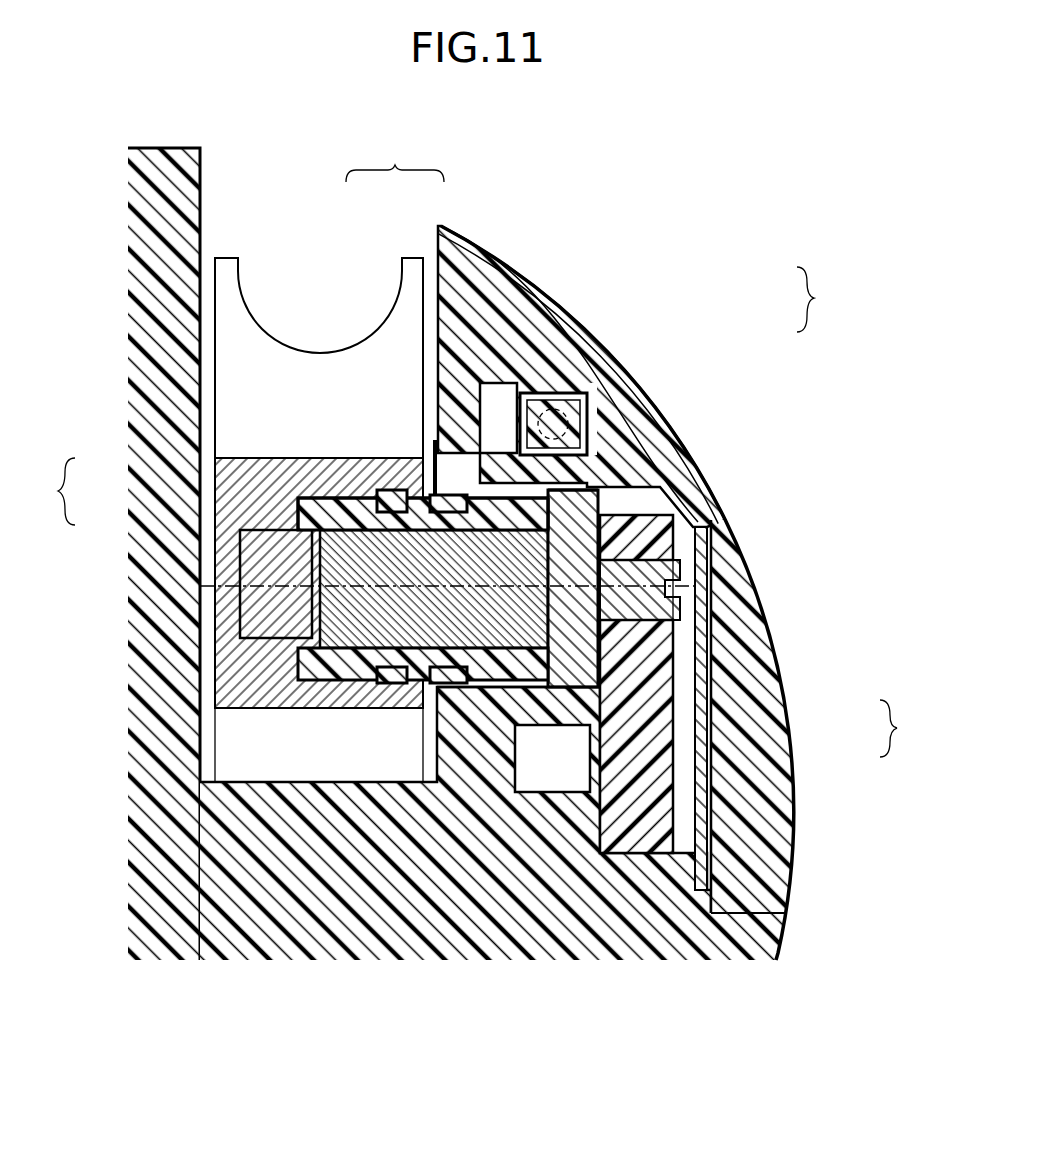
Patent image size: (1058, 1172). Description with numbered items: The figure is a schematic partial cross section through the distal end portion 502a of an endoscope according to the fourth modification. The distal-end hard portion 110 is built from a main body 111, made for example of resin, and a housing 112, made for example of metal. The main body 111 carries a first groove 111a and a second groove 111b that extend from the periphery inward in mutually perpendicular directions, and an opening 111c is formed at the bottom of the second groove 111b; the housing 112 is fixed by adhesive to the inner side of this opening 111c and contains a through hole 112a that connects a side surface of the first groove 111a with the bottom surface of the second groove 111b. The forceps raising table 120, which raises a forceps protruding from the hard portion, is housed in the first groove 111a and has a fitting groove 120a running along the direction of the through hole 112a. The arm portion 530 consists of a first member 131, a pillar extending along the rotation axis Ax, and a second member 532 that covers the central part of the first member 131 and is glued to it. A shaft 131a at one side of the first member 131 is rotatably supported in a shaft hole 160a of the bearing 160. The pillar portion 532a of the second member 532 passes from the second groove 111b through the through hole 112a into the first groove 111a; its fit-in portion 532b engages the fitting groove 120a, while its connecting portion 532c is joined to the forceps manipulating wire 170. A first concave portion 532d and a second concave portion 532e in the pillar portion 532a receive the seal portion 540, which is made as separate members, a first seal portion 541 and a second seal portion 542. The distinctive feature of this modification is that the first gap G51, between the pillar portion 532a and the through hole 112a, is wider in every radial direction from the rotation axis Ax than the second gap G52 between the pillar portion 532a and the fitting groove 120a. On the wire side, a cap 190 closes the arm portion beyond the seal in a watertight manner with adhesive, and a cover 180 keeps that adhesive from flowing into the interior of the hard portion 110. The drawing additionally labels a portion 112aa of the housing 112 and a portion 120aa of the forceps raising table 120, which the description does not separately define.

The distal-end hard portion 110 is at (820, 311).
The main body 111 is at (536, 287).
The first groove 111a is at (313, 218).
The second groove 111b is at (603, 498).
The opening 111c is at (498, 404).
The housing 112 is at (572, 333).
The through hole 112a is at (600, 494).
The facing surface 112aa is at (556, 541).
The forceps raising table 120 is at (228, 256).
The fitting groove 120a is at (240, 552).
The bearing end surface 120aa is at (408, 486).
The first member 131 is at (290, 570).
The shaft 131a is at (662, 556).
The bearing 160 is at (683, 645).
The shaft hole 160a is at (665, 612).
The forceps manipulating wire 170 is at (575, 416).
The cover 180 is at (705, 526).
The cap 190 is at (630, 371).
The distal end portion 502a is at (560, 168).
The arm portion 530 is at (52, 501).
The second member 532 is at (293, 500).
The pillar portion 532a is at (388, 498).
The fit-in portion 532b is at (362, 488).
The connecting portion 532c is at (572, 431).
The first concave portion 532d is at (448, 488).
The second concave portion 532e is at (395, 498).
The seal portion 540 is at (375, 163).
The first seal portion 541 is at (447, 493).
The second seal portion 542 is at (395, 490).
The first gap G51 is at (428, 497).
The second gap G52 is at (400, 512).
The rotation axis Ax is at (200, 586).